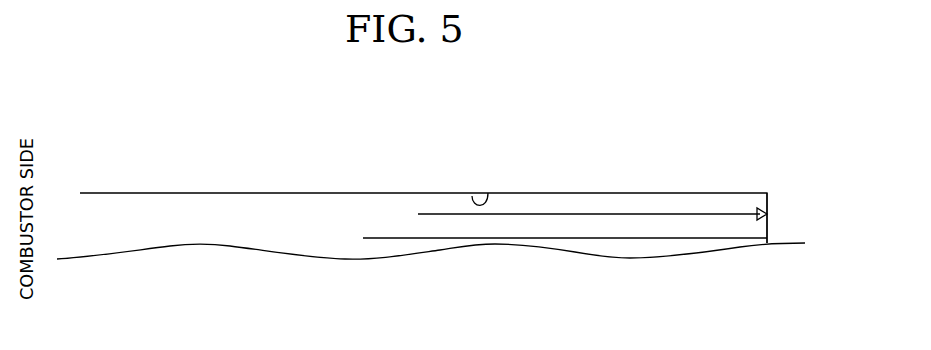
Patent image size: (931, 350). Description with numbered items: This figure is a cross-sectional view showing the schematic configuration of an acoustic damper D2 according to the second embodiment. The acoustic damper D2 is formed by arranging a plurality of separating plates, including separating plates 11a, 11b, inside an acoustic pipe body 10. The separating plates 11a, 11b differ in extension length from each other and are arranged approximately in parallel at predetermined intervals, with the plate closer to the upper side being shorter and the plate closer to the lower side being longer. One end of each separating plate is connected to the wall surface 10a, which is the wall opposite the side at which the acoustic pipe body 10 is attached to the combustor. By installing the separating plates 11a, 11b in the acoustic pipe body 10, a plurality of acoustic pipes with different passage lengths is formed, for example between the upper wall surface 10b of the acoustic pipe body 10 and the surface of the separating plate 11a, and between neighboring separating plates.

The acoustic pipe body 10 is at (612, 193).
The wall surface 10a is at (770, 214).
The upper wall surface 10b is at (488, 193).
The separating plate 11a is at (418, 214).
The separating plate 11b is at (363, 237).
The acoustic damper D2 is at (401, 173).